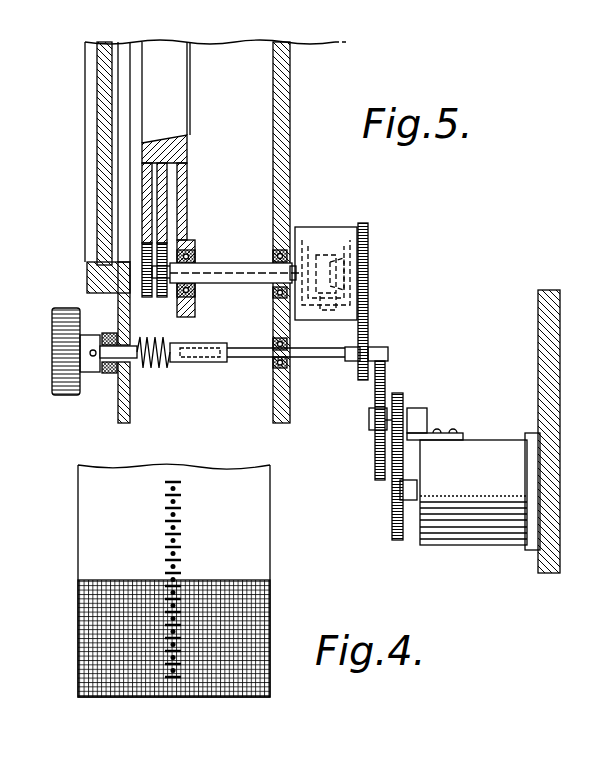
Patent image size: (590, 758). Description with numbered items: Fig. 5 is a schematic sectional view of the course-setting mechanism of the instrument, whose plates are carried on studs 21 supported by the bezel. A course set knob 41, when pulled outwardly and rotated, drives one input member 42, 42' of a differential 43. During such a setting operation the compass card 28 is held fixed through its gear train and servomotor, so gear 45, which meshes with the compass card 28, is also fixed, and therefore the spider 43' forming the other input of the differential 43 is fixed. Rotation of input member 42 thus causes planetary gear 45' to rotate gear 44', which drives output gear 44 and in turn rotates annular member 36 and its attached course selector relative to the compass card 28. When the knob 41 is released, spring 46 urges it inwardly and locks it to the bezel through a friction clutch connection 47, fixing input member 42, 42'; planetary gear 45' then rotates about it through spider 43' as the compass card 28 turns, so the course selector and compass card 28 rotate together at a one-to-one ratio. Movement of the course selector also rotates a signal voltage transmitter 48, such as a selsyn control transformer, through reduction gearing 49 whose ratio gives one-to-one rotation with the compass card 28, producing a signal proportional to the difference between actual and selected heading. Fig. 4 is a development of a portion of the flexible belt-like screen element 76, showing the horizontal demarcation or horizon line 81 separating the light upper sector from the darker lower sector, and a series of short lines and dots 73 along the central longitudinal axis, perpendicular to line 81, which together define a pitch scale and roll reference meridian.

In FIG. 5, the studs 21 is at (8, 428).
In FIG. 5, the compass card 28 is at (140, 208).
In FIG. 5, the annular member 36 is at (168, 192).
In FIG. 5, the course set knob 41 is at (52, 346).
In FIG. 5, the input member 42 is at (390, 301).
In FIG. 5, the input member 42' is at (371, 260).
In FIG. 5, the differential 43 is at (346, 253).
In FIG. 5, the spider 43' is at (338, 244).
In FIG. 5, the gear 44 is at (235, 268).
In FIG. 5, the gear 44' is at (325, 248).
In FIG. 5, the gear 45 is at (158, 289).
In FIG. 5, the planetary gear 45' is at (329, 319).
In FIG. 5, the spring 46 is at (150, 368).
In FIG. 5, the friction clutch connection 47 is at (104, 372).
In FIG. 5, the signal voltage transmitter 48 is at (476, 538).
In FIG. 5, the reduction gearing 49 is at (386, 376).
In FIG. 4, the lines and dots 73 is at (162, 530).
In FIG. 4, the belt-like element 76 is at (270, 545).
In FIG. 4, the demarcation line 81 is at (225, 580).